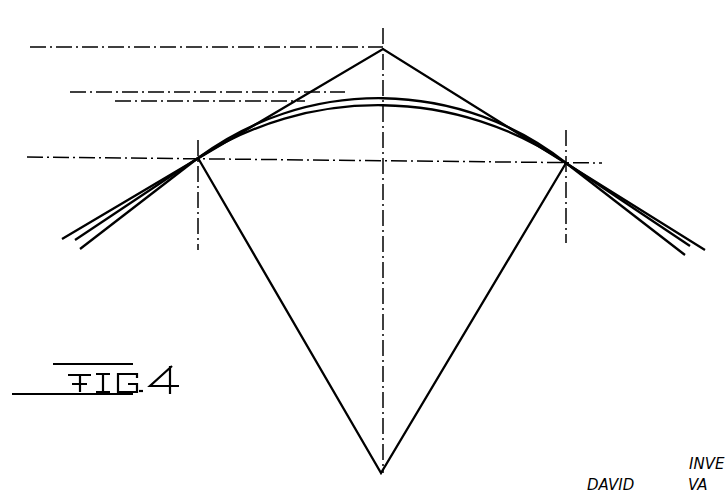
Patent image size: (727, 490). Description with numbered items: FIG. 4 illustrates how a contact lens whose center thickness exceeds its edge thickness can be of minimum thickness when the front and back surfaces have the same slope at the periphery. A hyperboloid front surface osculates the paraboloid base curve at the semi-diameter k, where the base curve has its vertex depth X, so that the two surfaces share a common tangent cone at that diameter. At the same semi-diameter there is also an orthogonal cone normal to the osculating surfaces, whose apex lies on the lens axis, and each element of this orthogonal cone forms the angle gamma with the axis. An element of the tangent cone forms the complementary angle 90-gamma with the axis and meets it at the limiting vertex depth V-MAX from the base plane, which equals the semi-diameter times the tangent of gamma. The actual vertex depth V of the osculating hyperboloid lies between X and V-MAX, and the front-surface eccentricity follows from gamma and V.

The limiting vertex depth V-MAX is at (43, 47).
The vertex depth of the osculating hyperboloid V is at (87, 92).
The vertex depth of the base curve X is at (125, 101).
The semi-diameter k is at (383, 223).
The cone angle gamma is at (381, 362).
The tangent cone angle 90-gamma is at (357, 67).